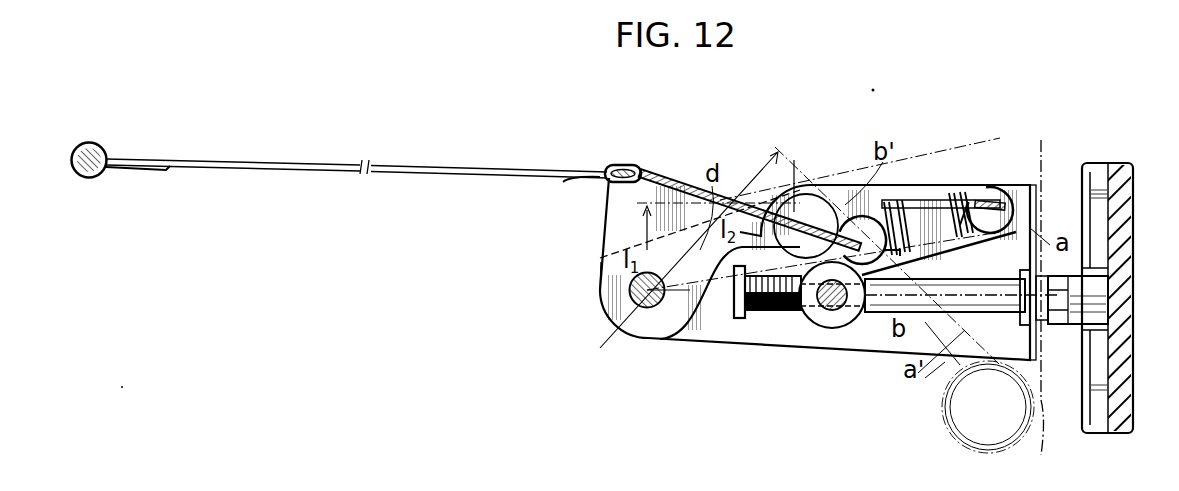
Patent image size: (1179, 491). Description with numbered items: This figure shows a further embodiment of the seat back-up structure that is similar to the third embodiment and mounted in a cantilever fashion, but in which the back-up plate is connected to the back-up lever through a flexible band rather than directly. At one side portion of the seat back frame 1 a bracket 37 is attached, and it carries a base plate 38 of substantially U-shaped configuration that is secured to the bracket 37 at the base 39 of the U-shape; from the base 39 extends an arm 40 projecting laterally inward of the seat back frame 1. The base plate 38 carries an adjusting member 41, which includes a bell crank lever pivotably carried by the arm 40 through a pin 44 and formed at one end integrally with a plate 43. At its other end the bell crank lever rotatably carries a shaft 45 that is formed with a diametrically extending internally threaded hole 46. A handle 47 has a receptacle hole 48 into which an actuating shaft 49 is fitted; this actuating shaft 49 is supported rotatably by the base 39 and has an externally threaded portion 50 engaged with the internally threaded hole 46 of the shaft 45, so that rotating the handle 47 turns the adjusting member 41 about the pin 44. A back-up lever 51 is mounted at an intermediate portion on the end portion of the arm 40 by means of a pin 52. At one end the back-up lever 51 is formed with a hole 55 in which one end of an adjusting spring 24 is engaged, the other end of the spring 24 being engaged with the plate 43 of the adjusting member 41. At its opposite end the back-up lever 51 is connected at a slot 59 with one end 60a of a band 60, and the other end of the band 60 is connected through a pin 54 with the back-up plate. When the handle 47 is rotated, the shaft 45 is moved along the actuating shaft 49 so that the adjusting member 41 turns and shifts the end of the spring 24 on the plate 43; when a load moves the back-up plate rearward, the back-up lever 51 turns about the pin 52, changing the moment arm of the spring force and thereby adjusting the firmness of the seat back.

The seat back frame 1 is at (950, 432).
The adjusting spring 24 is at (966, 192).
The bracket 37 is at (1042, 438).
The base plate 38 is at (843, 330).
The base 39 is at (1040, 215).
The arm 40 is at (700, 343).
The adjusting member 41 is at (842, 188).
The plate 43 is at (1006, 178).
The pin 44 is at (794, 212).
The shaft 45 is at (852, 335).
The internally threaded hole 46 is at (812, 312).
The handle 47 is at (1118, 432).
The receptacle hole 48 is at (1130, 316).
The actuating shaft 49 is at (938, 292).
The externally threaded portion 50 is at (745, 342).
The back-up lever 51 is at (602, 262).
The pin 52 is at (636, 306).
The pin 54 is at (102, 176).
The hole 55 is at (790, 342).
The slot 59 is at (650, 174).
The band 60 is at (425, 168).
The end of band 60a is at (606, 171).